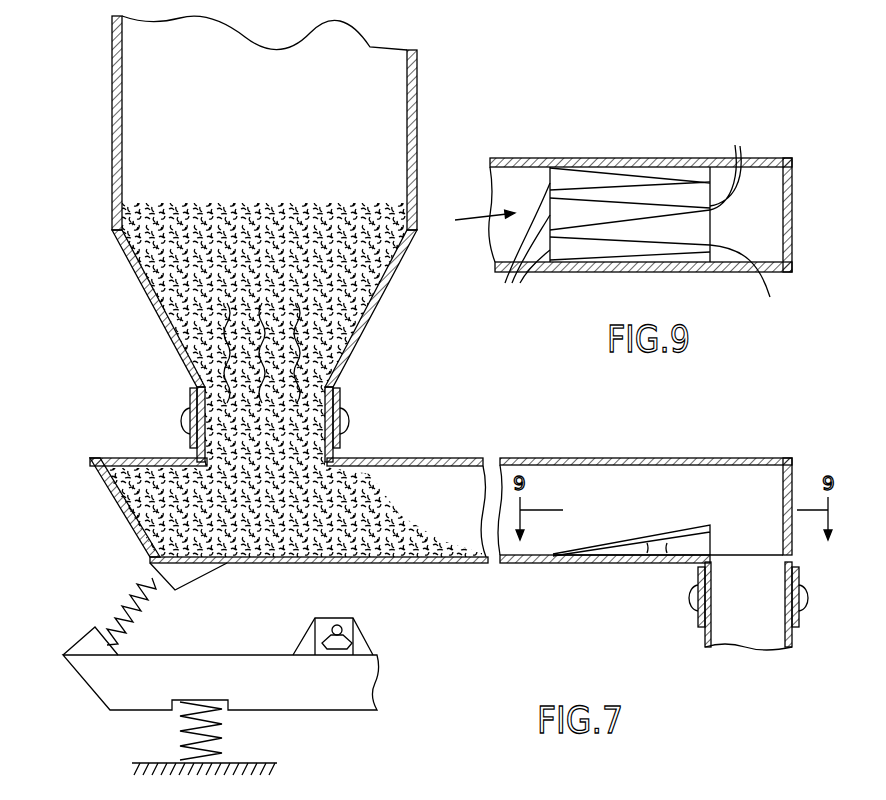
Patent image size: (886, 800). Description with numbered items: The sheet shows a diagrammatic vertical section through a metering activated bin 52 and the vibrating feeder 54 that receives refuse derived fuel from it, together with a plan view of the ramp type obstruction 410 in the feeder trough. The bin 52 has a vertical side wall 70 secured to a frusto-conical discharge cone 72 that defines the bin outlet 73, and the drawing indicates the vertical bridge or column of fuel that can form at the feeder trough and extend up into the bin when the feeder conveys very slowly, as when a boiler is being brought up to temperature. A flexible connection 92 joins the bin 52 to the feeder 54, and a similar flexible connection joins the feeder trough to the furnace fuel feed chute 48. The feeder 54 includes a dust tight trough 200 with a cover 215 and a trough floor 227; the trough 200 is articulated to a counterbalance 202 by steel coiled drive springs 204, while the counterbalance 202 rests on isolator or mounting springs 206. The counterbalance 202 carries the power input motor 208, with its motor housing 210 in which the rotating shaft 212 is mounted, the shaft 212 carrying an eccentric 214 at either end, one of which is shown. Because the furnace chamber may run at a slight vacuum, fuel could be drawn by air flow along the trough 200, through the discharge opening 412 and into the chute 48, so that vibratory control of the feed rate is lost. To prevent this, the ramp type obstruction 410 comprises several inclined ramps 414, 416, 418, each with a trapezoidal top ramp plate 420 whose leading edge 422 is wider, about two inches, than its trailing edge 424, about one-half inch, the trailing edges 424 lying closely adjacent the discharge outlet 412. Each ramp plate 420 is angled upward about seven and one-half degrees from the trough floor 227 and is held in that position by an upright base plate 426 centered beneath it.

In FIG. 7, the metering activated bin 52 is at (417, 67).
In FIG. 7, the vertical side wall 70 is at (410, 120).
In FIG. 7, the discharge cone 72 is at (385, 310).
In FIG. 7, the outlet 73 is at (312, 383).
In FIG. 7, the flexible connection 92 is at (353, 420).
In FIG. 7, the drive springs 204 is at (112, 607).
In FIG. 7, the counterbalance 202 is at (233, 655).
In FIG. 7, the mounting springs 206 is at (178, 732).
In FIG. 7, the power input motor 208 is at (359, 633).
In FIG. 7, the motor housing 210 is at (344, 620).
In FIG. 7, the rotating shaft 212 is at (329, 627).
In FIG. 7, the eccentric 214 is at (333, 655).
In FIG. 7, the feeder trough 200 is at (645, 514).
In FIG. 7, the cover 215 is at (548, 457).
In FIG. 7, the trough floor 227 is at (538, 563).
In FIG. 9, the trough floor 227 is at (508, 183).
In FIG. 7, the vibrating feeder 54 is at (640, 447).
In FIG. 9, the vibrating feeder 54 is at (567, 157).
In FIG. 7, the ramp type obstruction 410 is at (605, 506).
In FIG. 9, the ramp type obstruction 410 is at (624, 167).
In FIG. 7, the discharge opening 412 is at (752, 584).
In FIG. 9, the discharge opening 412 is at (765, 190).
In FIG. 9, the inclined ramp 414 is at (679, 170).
In FIG. 9, the inclined ramp 416 is at (672, 212).
In FIG. 9, the inclined ramp 418 is at (640, 248).
In FIG. 9, the top ramp plate 420 is at (668, 250).
In FIG. 9, the leading edge 422 is at (515, 246).
In FIG. 7, the trailing edge 424 is at (712, 522).
In FIG. 9, the trailing edge 424 is at (764, 214).
In FIG. 7, the upright base plate 426 is at (667, 560).
In FIG. 7, the furnace fuel feed chute 48 is at (797, 640).